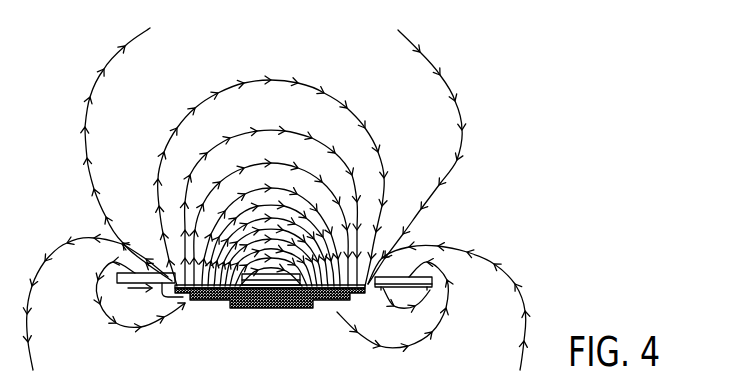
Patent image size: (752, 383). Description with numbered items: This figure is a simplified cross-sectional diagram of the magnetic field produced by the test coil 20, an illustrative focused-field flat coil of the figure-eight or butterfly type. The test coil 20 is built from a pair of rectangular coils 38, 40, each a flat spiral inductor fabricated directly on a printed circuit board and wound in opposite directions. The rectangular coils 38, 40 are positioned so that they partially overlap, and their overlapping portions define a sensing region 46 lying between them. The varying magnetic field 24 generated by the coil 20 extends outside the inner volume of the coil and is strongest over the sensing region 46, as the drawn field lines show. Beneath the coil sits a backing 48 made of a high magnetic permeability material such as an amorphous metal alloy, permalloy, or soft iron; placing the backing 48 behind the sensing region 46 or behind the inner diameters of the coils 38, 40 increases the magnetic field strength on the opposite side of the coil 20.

The test coil 20 is at (314, 229).
The varying magnetic field 24 is at (444, 109).
The rectangular coil 38 is at (107, 262).
The rectangular coil 40 is at (428, 244).
The sensing region 46 is at (274, 267).
The backing 48 is at (211, 306).